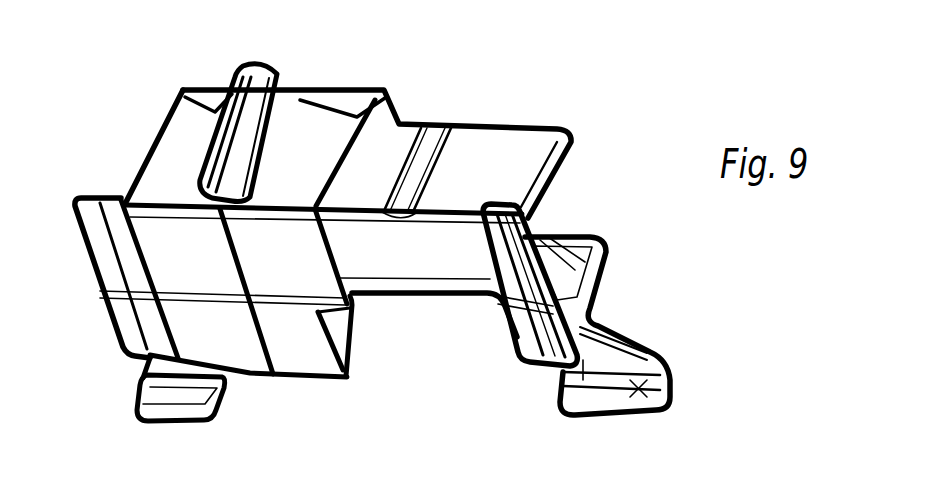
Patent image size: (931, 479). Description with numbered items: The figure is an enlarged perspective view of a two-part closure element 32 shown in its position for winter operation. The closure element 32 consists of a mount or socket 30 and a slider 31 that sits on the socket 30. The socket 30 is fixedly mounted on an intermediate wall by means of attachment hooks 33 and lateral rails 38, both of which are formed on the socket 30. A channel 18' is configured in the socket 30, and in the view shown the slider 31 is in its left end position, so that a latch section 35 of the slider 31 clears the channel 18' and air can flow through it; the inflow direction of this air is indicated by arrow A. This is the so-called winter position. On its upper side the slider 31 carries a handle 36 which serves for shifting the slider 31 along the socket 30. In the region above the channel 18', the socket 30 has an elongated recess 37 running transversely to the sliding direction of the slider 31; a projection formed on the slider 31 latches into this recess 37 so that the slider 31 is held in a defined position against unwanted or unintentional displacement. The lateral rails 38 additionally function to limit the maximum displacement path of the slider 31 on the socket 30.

The socket 30 is at (524, 118).
The slider 31 is at (361, 84).
The closure element 32 is at (133, 115).
The attachment hooks 33 is at (153, 405).
The latch section 35 is at (233, 330).
The handle 36 is at (263, 100).
The elongated recess 37 is at (437, 152).
The lateral rails 38 is at (530, 235).
The channel 18' is at (438, 363).
The arrow A is at (394, 342).